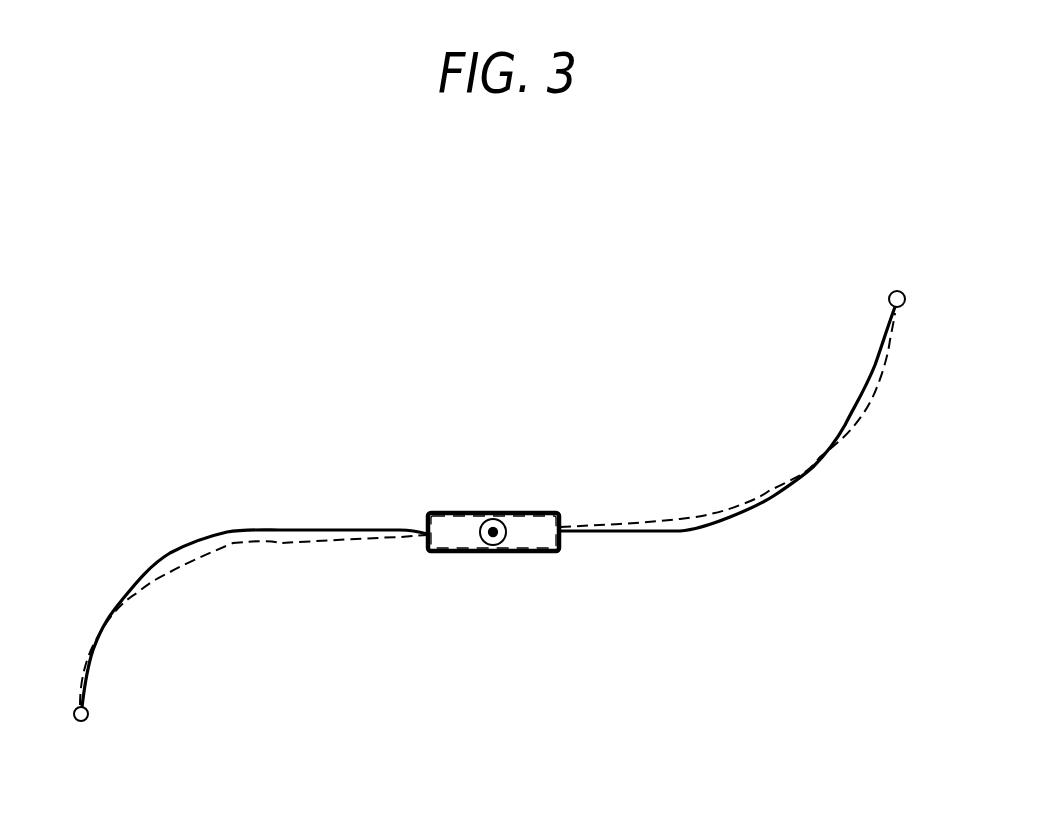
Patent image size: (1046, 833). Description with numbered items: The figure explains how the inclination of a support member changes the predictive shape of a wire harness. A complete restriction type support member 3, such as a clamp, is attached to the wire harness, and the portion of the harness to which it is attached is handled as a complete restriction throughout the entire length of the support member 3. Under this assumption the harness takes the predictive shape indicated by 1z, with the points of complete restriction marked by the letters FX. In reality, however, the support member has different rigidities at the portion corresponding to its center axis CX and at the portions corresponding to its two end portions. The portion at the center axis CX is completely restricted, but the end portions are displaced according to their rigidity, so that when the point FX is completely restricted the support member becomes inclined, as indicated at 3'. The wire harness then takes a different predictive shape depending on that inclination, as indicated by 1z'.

The point of complete restriction FX is at (88, 714).
The wire harness predictive shape 1z is at (488, 507).
The wire harness predictive shape depending on inclination 1z' is at (487, 509).
The complete restriction type support member 3 is at (507, 566).
The inclined support member 3' is at (493, 580).
The center axis CX is at (497, 547).